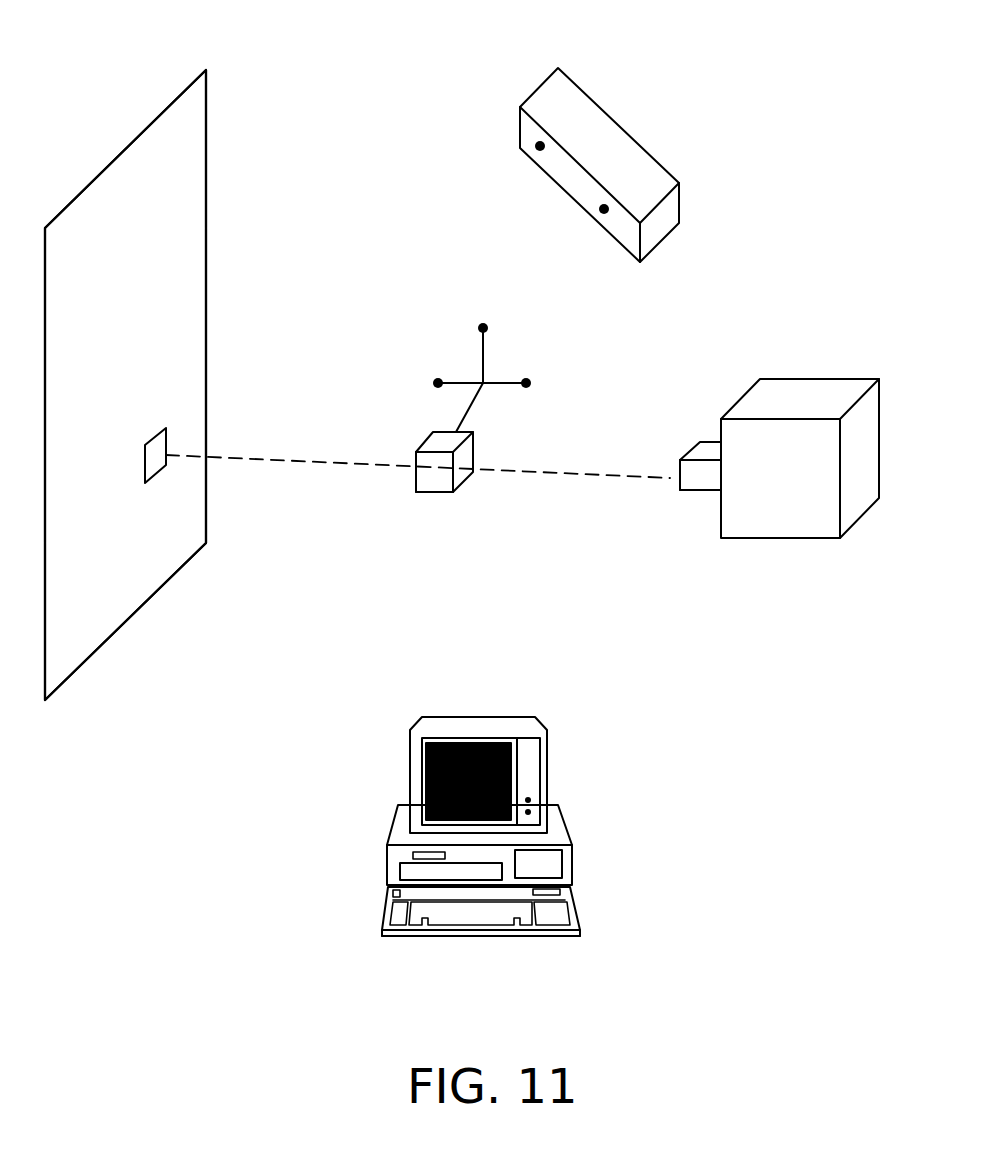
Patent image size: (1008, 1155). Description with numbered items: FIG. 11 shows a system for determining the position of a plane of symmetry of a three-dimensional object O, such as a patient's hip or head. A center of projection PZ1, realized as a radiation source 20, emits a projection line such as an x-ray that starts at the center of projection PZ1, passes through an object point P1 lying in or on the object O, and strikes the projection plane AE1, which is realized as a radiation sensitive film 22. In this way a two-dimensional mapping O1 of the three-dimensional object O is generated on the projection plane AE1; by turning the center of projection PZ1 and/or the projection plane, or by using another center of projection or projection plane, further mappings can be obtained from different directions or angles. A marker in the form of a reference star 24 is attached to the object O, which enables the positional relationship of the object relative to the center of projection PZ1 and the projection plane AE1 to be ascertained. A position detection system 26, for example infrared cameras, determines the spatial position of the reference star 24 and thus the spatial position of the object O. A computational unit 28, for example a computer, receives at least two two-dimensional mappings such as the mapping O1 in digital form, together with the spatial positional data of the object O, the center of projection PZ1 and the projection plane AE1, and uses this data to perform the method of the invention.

The projection plane AE1 is at (166, 60).
The radiation sensitive film 22 is at (206, 158).
The two-dimensional mapping O1 is at (176, 415).
The position detection system 26 is at (558, 68).
The reference star 24 is at (485, 360).
The object O is at (415, 482).
The object point P1 is at (435, 478).
The center of projection PZ1 is at (656, 510).
The radiation source 20 is at (819, 379).
The computational unit 28 is at (460, 715).